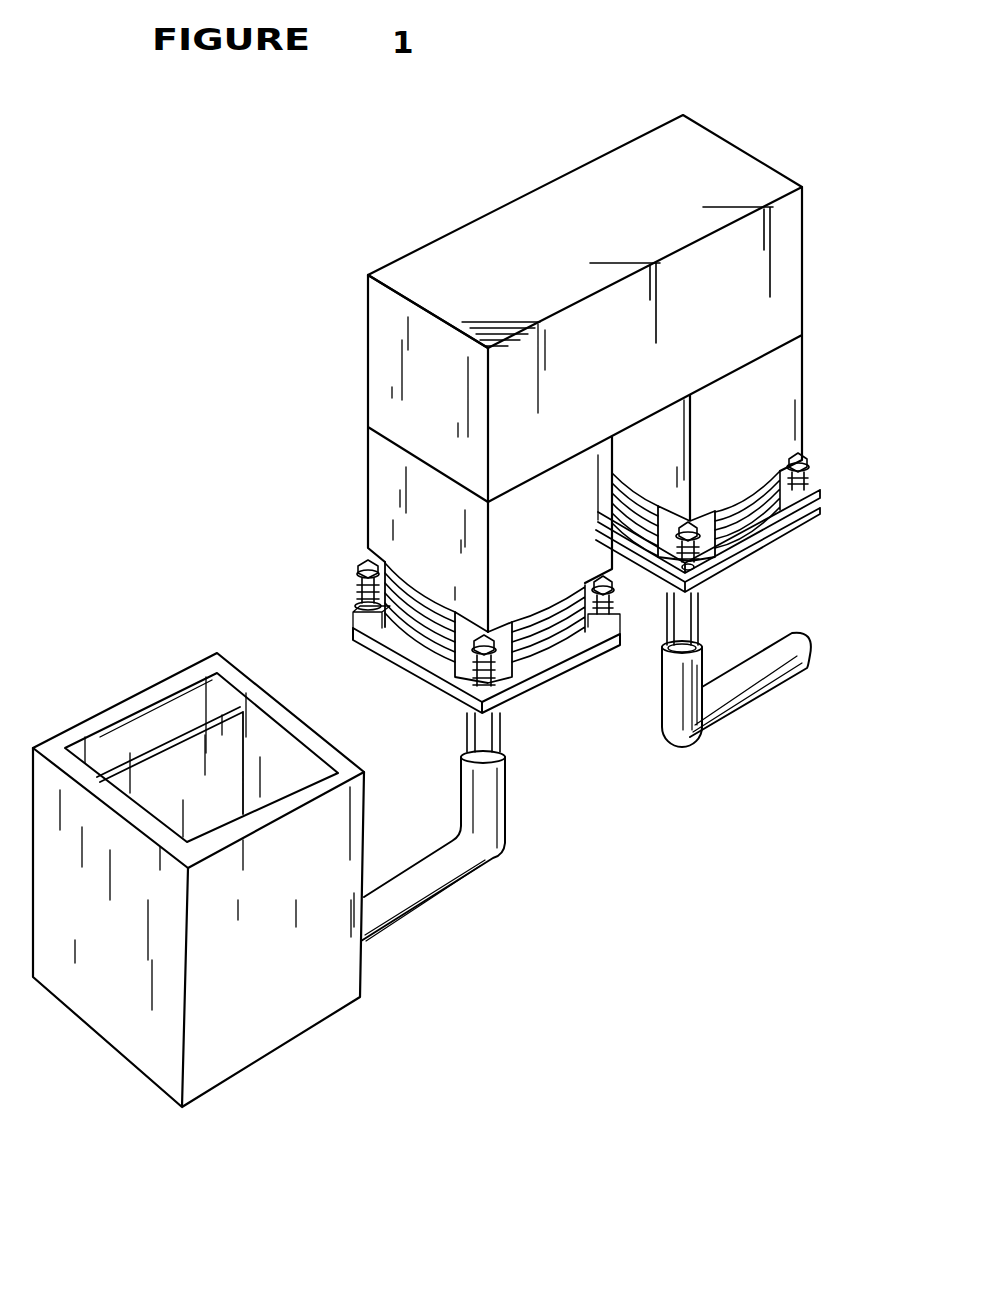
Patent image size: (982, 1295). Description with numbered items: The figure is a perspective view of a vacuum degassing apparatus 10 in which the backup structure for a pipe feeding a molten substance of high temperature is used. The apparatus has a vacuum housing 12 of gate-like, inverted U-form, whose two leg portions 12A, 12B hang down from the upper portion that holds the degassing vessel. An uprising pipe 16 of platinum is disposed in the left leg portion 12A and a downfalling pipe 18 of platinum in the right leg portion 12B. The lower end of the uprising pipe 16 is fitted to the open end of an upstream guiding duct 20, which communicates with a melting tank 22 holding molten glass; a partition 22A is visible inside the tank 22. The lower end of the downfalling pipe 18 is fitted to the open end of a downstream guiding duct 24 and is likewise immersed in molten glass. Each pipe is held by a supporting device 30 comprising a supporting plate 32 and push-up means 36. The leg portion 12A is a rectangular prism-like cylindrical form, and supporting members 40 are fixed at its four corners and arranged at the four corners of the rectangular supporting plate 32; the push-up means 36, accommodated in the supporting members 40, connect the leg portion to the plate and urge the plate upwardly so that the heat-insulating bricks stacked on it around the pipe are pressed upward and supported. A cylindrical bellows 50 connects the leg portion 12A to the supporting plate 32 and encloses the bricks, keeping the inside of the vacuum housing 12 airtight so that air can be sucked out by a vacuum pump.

The vacuum degassing apparatus 10 is at (512, 186).
The vacuum housing 12 is at (437, 272).
The leg portion 12A is at (380, 475).
The leg portion 12B is at (772, 397).
The uprising pipe 16 is at (475, 735).
The downfalling pipe 18 is at (673, 612).
The upstream guiding duct 20 is at (427, 898).
The melting tank 22 is at (80, 732).
The partition 22A is at (150, 758).
The downstream guiding duct 24 is at (728, 697).
The supporting device 30 is at (340, 612).
The supporting plate 32 is at (537, 687).
The push-up means 36 is at (340, 578).
The supporting member 40 is at (372, 628).
The cylindrical bellows 50 is at (412, 648).